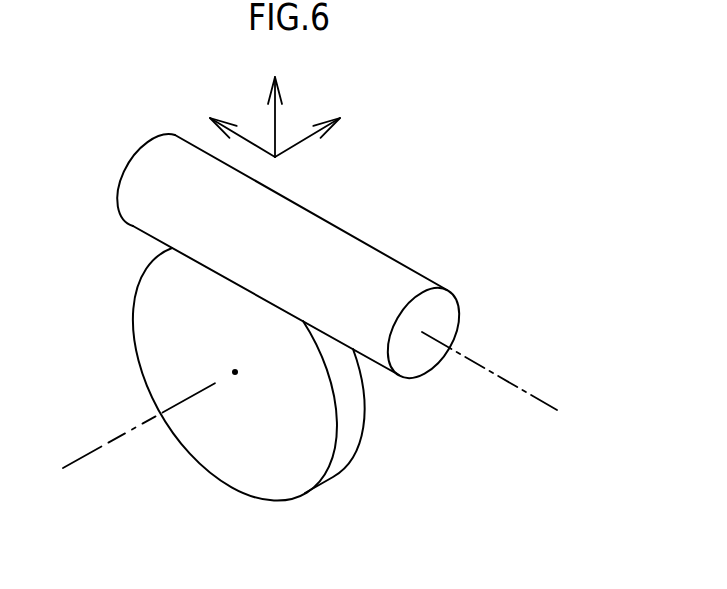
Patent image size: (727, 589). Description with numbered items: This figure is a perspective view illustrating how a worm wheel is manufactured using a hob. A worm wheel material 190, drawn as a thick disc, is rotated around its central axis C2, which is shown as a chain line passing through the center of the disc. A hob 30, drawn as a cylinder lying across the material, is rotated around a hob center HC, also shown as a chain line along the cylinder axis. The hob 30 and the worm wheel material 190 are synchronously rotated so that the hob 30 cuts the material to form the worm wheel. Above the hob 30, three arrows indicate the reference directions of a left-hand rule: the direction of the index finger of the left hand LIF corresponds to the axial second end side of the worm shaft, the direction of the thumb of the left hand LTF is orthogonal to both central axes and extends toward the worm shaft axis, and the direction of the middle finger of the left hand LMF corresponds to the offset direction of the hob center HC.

The hob 30 is at (353, 272).
The worm wheel material 190 is at (148, 310).
The central axis of the worm wheel C2 is at (78, 459).
The hob center HC is at (532, 395).
The direction of the index finger of the left hand LIF is at (252, 143).
The direction of the thumb of the left hand LTF is at (275, 118).
The direction of the middle finger of the left hand LMF is at (293, 147).